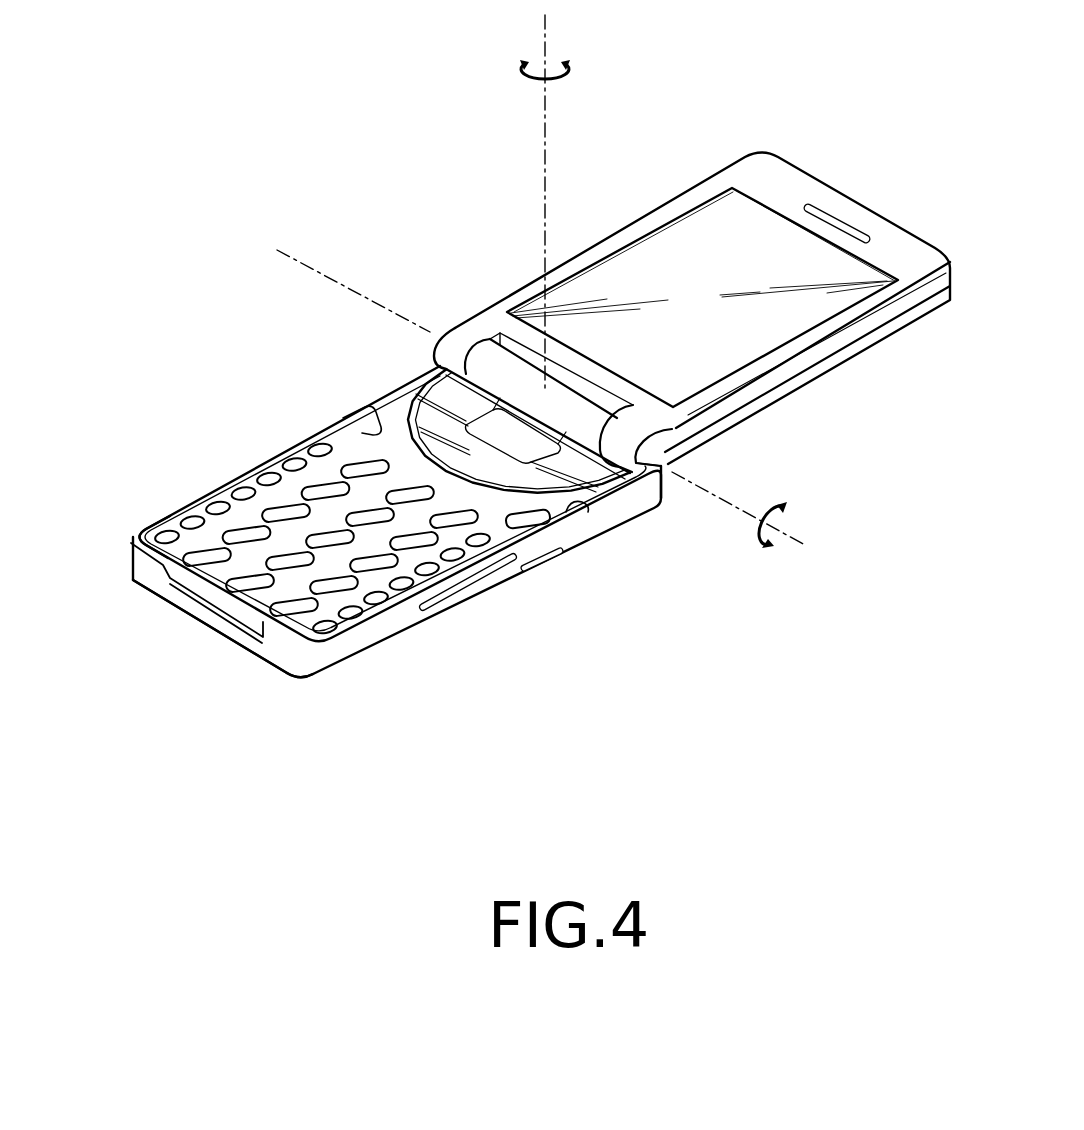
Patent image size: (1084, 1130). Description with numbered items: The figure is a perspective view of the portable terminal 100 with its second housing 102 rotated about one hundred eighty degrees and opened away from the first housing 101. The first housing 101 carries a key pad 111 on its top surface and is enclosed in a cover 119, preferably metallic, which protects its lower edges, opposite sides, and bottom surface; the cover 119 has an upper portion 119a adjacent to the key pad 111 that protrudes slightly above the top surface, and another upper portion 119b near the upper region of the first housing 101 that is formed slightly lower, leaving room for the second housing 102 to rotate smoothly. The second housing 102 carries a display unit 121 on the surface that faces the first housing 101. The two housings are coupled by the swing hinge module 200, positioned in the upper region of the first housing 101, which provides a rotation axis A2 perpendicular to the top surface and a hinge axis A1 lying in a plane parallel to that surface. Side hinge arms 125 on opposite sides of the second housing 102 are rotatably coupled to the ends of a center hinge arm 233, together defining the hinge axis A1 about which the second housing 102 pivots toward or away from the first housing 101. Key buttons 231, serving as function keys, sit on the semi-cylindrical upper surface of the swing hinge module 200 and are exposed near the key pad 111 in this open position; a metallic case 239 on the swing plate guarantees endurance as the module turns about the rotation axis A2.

The portable terminal 100 is at (348, 117).
The first housing 101 is at (490, 615).
The second housing 102 is at (640, 205).
The key pad 111 is at (270, 510).
The cover 119 is at (290, 656).
The upper portion of the cover 119a is at (155, 512).
The another upper portion of the cover 119b is at (588, 507).
The display unit 121 is at (805, 320).
The side hinge arms 125 is at (458, 343).
The swing hinge module 200 is at (428, 374).
The key buttons 231 is at (615, 493).
The center hinge arm 233 is at (485, 356).
The metallic case 239 is at (365, 408).
The hinge axis A1 is at (792, 537).
The rotation axis A2 is at (546, 22).